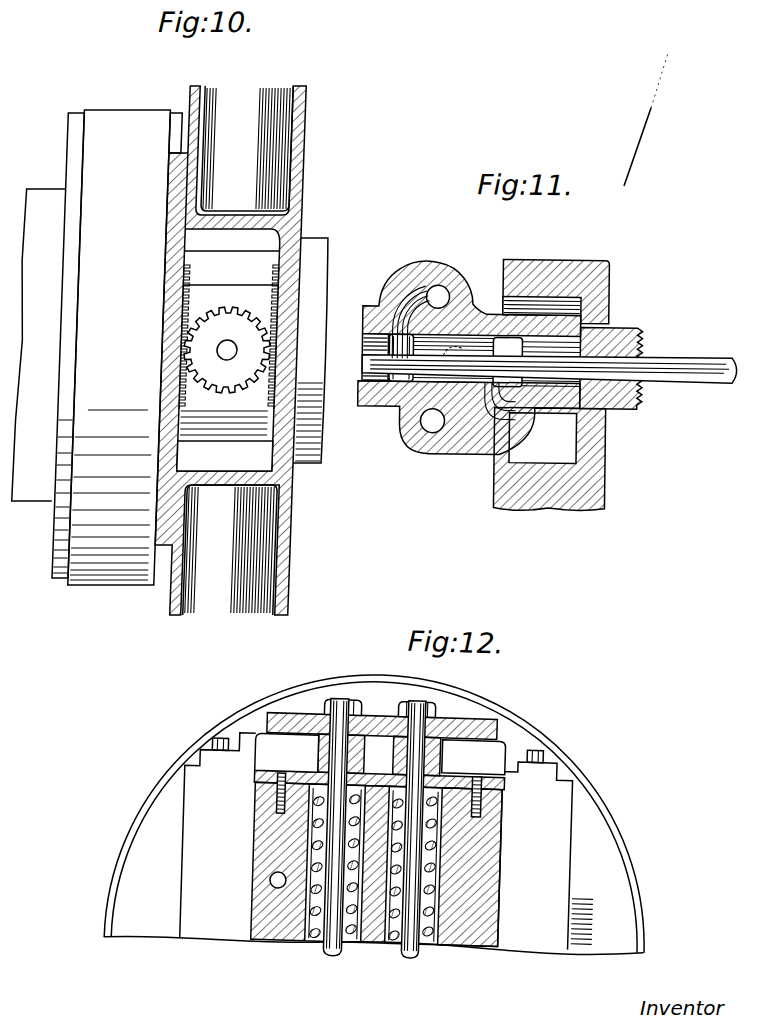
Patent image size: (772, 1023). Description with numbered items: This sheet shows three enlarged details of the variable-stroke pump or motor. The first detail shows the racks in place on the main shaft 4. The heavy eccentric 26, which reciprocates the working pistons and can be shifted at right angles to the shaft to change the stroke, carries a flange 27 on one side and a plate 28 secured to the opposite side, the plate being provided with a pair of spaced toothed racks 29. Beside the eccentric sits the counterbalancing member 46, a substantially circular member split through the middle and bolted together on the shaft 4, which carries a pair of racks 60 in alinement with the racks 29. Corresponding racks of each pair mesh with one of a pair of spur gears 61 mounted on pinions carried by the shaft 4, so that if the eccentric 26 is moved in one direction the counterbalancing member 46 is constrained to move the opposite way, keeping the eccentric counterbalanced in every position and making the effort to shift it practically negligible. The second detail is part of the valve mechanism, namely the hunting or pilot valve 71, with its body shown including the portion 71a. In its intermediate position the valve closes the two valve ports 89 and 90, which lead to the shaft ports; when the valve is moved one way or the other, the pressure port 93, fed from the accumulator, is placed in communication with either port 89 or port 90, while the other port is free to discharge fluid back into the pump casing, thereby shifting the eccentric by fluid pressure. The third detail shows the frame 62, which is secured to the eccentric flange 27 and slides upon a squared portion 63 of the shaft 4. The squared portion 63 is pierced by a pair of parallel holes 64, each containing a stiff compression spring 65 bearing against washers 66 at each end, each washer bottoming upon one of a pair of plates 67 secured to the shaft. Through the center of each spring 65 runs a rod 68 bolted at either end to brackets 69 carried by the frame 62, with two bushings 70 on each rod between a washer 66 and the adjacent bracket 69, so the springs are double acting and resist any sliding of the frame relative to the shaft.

In FIG. 10, the shaft 4 is at (311, 287).
In FIG. 12, the shaft 4 is at (478, 932).
In FIG. 10, the eccentric 26 is at (92, 572).
In FIG. 10, the flange 27 is at (67, 123).
In FIG. 10, the plate 28 is at (170, 122).
In FIG. 10, the toothed racks 29 is at (185, 278).
In FIG. 10, the counterbalancing member 46 is at (204, 90).
In FIG. 10, the racks 60 is at (284, 273).
In FIG. 10, the spur gears 61 is at (227, 350).
In FIG. 12, the frame 62 is at (547, 877).
In FIG. 10, the squared portion 63 is at (40, 483).
In FIG. 12, the squared portion 63 is at (192, 893).
In FIG. 12, the parallel holes 64 is at (303, 942).
In FIG. 12, the compression spring 65 is at (386, 945).
In FIG. 12, the washers 66 is at (285, 825).
In FIG. 12, the plates 67 is at (468, 767).
In FIG. 12, the rod 68 is at (334, 951).
In FIG. 12, the brackets 69 is at (482, 716).
In FIG. 12, the bushings 70 is at (315, 754).
In FIG. 11, the pilot valve 71 is at (549, 383).
In FIG. 11, the lower body portion 71a is at (385, 409).
In FIG. 11, the valve port 89 is at (452, 433).
In FIG. 11, the valve port 90 is at (412, 287).
In FIG. 11, the pressure port 93 is at (455, 358).